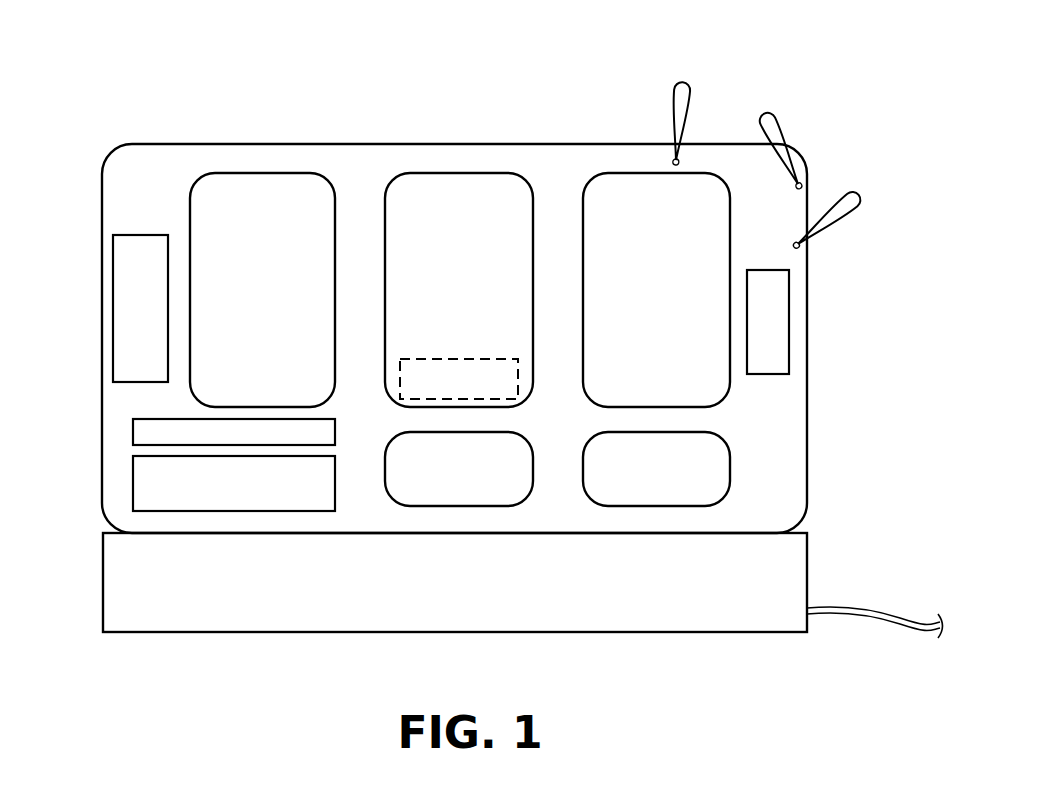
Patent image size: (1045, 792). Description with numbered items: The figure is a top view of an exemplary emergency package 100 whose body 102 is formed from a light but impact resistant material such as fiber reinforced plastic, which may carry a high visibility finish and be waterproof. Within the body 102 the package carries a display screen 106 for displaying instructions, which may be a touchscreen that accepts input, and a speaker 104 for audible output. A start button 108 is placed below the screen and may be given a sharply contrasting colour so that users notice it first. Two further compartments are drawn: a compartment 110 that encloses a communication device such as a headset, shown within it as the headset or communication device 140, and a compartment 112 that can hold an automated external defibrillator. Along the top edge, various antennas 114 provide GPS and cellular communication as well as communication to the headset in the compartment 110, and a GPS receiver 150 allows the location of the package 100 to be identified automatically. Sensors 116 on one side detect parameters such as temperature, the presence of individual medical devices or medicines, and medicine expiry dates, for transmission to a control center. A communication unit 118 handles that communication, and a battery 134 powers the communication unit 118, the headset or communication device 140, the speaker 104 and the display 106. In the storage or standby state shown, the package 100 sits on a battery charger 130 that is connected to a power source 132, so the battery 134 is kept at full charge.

The emergency package 100 is at (103, 71).
The body 102 is at (178, 153).
The speaker 104 is at (728, 476).
The display screen 106 is at (264, 186).
The start button 108 is at (438, 484).
The compartment 110 is at (455, 186).
The compartment 112 is at (620, 186).
The antennas 114 is at (689, 87).
The sensors 116 is at (125, 298).
The communication unit 118 is at (142, 432).
The battery charger 130 is at (438, 597).
The power source 132 is at (879, 618).
The battery 134 is at (142, 482).
The headset or communication device 140 is at (438, 392).
The GPS receiver 150 is at (780, 321).